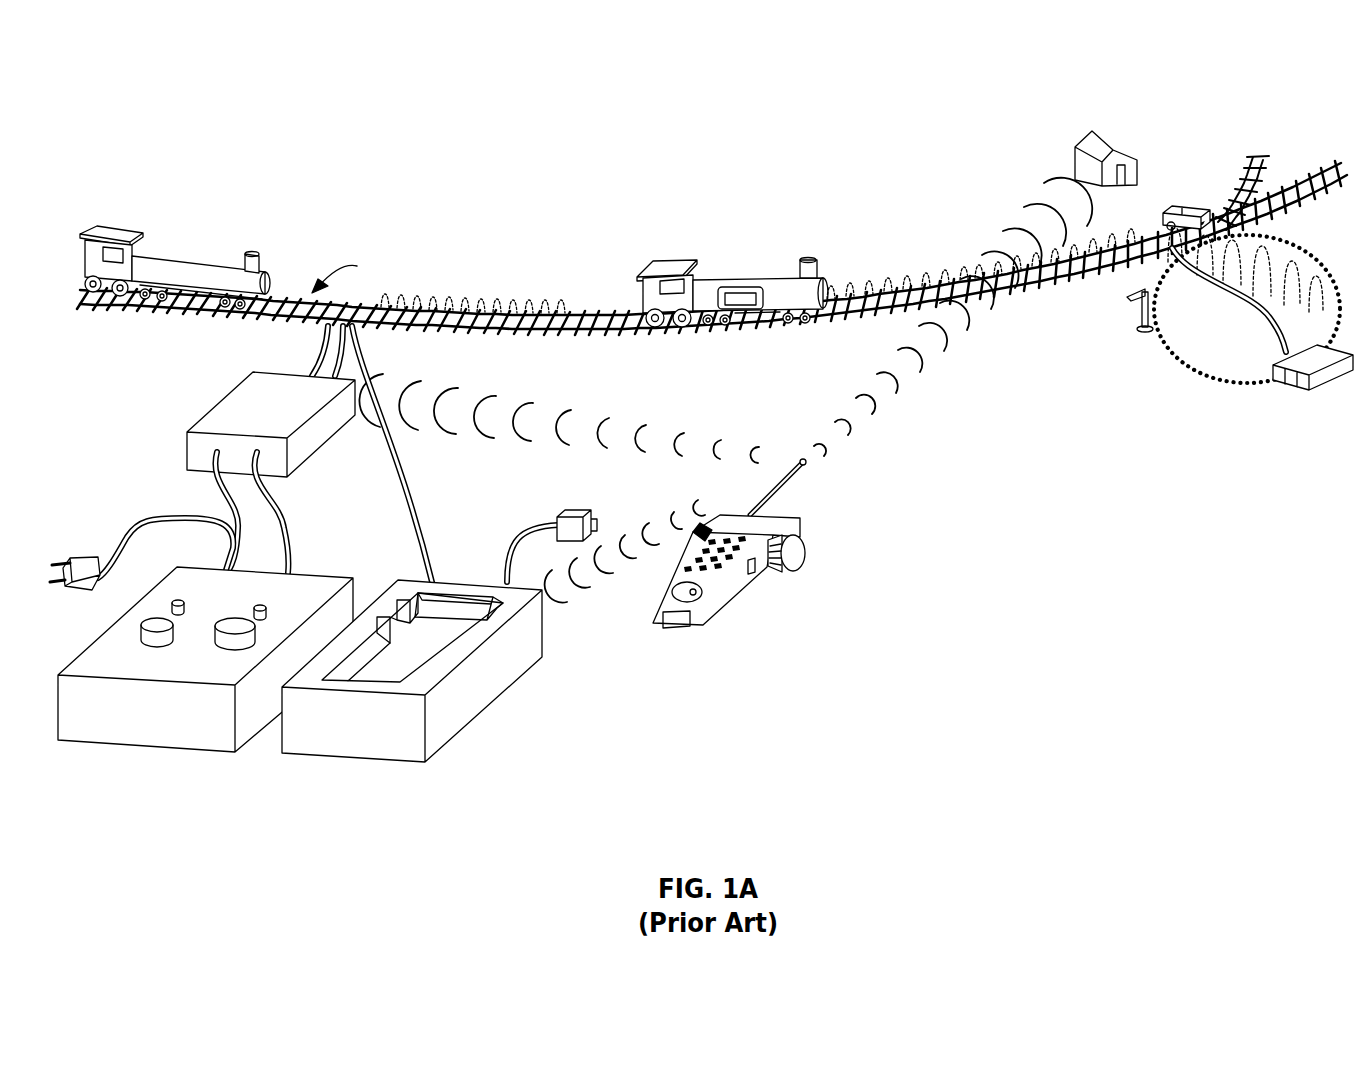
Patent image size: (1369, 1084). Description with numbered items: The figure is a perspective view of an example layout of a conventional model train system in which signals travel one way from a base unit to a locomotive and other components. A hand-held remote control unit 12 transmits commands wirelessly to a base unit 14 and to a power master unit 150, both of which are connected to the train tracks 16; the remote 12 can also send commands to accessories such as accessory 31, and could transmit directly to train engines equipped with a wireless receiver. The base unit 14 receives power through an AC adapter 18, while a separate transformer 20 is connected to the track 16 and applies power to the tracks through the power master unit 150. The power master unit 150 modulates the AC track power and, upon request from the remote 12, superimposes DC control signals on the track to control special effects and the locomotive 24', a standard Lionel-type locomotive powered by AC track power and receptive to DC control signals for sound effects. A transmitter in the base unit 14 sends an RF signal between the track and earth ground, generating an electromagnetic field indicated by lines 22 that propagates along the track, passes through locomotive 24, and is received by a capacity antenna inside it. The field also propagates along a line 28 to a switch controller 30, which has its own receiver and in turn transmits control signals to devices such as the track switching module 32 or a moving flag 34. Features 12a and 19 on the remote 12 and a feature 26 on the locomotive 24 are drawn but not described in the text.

The hand-held remote control unit 12 is at (800, 525).
The throttle dial 12a is at (796, 553).
The base unit 14 is at (347, 758).
The train tracks 16 is at (353, 274).
The AC adapter 18 is at (558, 520).
The direction switch 19 is at (752, 566).
The transformer 20 is at (118, 748).
The electromagnetic field lines 22 is at (493, 297).
The locomotive 24 is at (732, 280).
The locomotive 24' is at (162, 257).
The receiver in locomotive 26 is at (741, 296).
The line 28 is at (1257, 302).
The switch controller 30 is at (1290, 383).
The accessory 31 is at (1107, 134).
The track switching module 32 is at (1182, 210).
The moving flag 34 is at (1133, 327).
The power master unit 150 is at (228, 403).